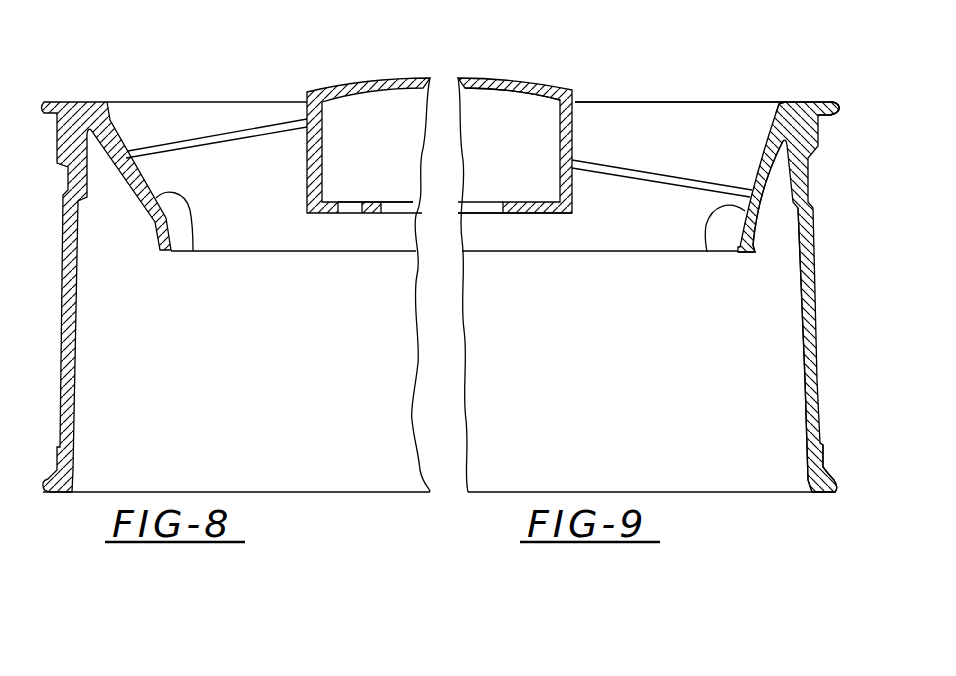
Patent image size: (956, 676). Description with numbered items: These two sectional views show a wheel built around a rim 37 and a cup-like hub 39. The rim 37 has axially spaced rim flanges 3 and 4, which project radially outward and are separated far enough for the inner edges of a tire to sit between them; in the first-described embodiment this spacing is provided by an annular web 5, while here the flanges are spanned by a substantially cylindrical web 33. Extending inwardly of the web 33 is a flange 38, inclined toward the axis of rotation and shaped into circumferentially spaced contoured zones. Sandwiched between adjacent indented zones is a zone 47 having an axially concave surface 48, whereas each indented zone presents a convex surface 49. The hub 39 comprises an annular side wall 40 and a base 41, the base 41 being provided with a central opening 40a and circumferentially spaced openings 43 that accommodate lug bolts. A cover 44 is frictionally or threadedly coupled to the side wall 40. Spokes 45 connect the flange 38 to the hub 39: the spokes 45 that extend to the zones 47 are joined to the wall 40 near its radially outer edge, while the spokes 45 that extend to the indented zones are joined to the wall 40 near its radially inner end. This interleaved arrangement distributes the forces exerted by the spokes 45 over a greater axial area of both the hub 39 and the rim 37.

In FIG. 9, the rim flange 3 is at (833, 110).
In FIG. 9, the rim flange 4 is at (833, 487).
In FIG. 9, the annular web 5 is at (817, 282).
In FIG. 9, the web 33 is at (797, 357).
In FIG. 9, the rim 37 is at (812, 100).
In FIG. 9, the flange 38 is at (758, 244).
In FIG. 9, the hub 39 is at (590, 93).
In FIG. 9, the side wall 40 is at (574, 147).
In FIG. 9, the central opening 40a is at (483, 202).
In FIG. 9, the base 41 is at (548, 215).
In FIG. 8, the openings 43 is at (358, 202).
In FIG. 8, the cover 44 is at (330, 92).
In FIG. 8, the spokes 45 is at (243, 148).
In FIG. 9, the spokes 45 is at (729, 183).
In FIG. 8, the zone 47 is at (133, 190).
In FIG. 8, the axially concave surface 48 is at (192, 252).
In FIG. 9, the convex surface 49 is at (707, 252).